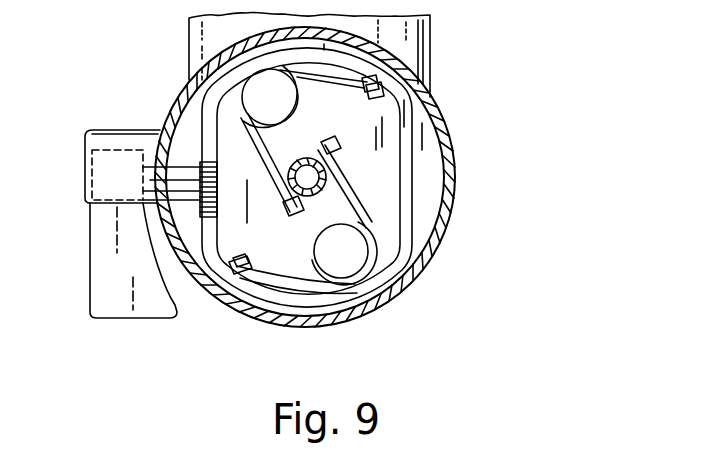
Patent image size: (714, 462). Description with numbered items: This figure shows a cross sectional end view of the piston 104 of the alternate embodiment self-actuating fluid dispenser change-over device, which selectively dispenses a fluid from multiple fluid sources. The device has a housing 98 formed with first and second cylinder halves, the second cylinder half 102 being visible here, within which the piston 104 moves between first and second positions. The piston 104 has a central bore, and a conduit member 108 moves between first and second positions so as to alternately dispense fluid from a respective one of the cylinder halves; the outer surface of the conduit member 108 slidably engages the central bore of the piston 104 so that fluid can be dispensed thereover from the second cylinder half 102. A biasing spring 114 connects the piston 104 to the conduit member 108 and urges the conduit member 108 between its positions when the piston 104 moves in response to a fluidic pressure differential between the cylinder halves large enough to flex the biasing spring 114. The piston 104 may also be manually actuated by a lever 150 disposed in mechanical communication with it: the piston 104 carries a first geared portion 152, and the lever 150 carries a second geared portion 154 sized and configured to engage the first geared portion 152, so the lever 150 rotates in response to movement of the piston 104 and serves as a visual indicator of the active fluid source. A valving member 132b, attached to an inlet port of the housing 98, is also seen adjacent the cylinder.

The valving member 132b is at (397, 33).
The housing 98 is at (433, 81).
The second cylinder half 102 is at (456, 174).
The piston 104 is at (417, 238).
The conduit member 108 is at (303, 150).
The biasing spring 114 is at (264, 184).
The lever 150 is at (75, 159).
The first geared portion 152 is at (203, 207).
The second geared portion 154 is at (112, 292).